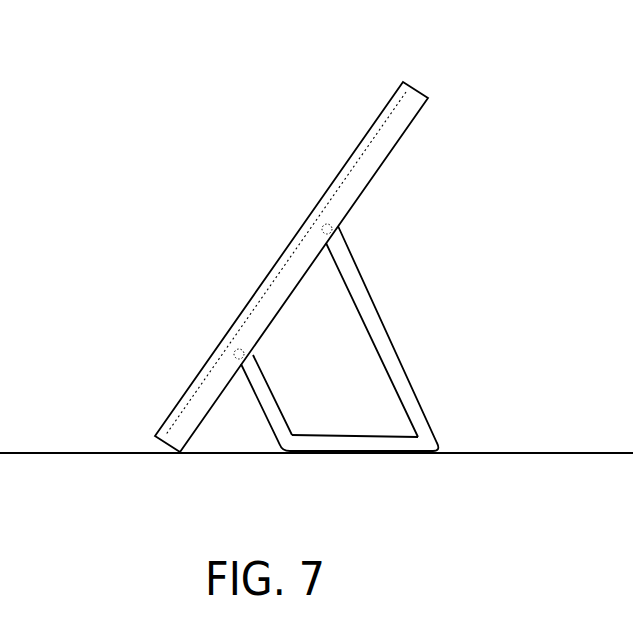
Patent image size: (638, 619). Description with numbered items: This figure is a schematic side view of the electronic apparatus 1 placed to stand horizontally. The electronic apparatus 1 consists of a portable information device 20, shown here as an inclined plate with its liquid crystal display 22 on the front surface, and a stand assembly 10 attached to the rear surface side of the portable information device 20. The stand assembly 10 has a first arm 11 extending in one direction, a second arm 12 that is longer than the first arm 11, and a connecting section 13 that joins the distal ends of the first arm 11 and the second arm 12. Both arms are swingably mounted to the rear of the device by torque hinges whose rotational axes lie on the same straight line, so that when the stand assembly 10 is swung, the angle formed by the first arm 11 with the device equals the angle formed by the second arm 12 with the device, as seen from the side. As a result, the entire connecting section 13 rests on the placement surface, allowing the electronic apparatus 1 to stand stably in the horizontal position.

The electronic apparatus 1 is at (466, 66).
The stand assembly 10 is at (405, 290).
The first arm 11 is at (274, 417).
The second arm 12 is at (407, 385).
The connecting section 13 is at (352, 445).
The portable information device 20 is at (395, 79).
The liquid crystal display 22 is at (347, 165).